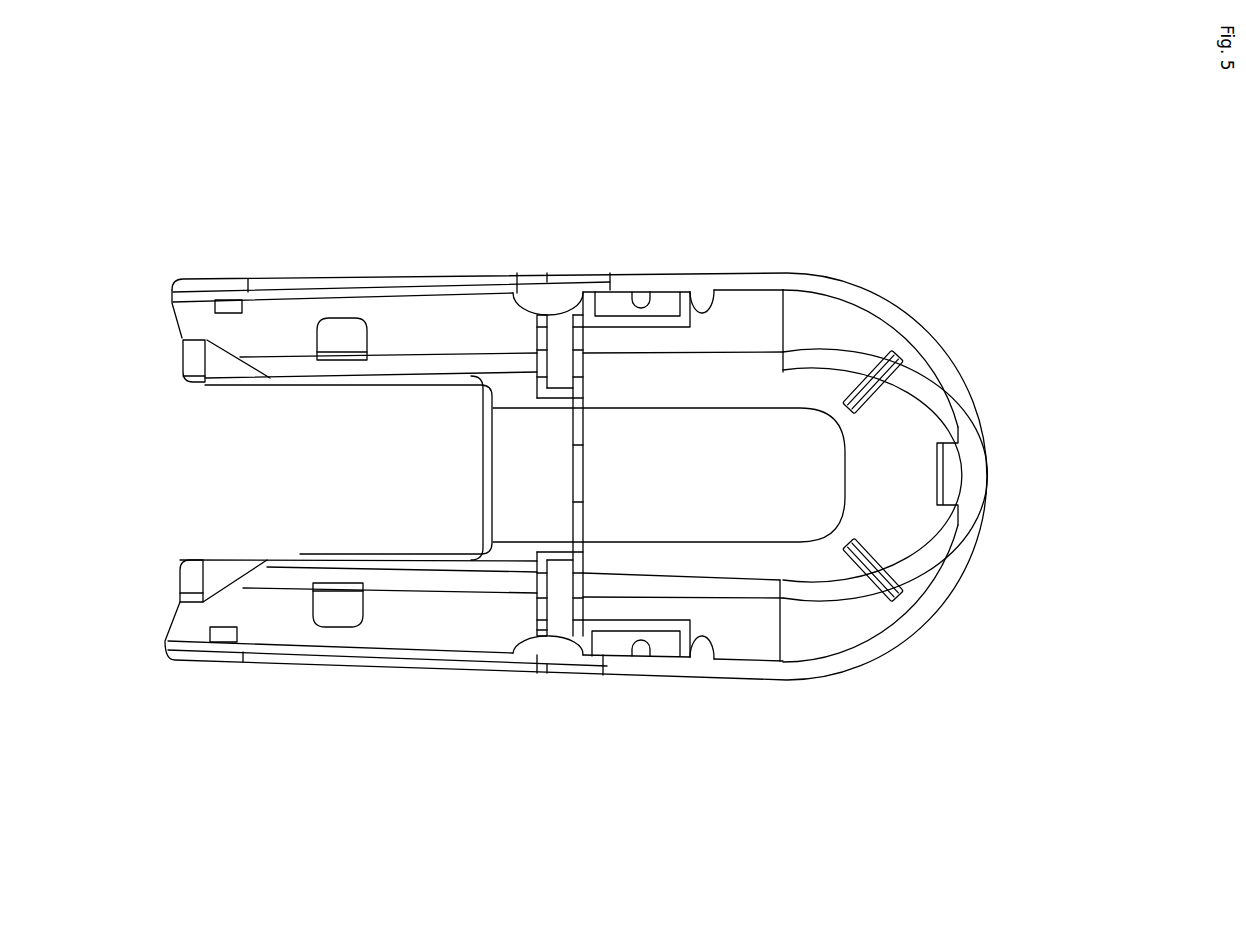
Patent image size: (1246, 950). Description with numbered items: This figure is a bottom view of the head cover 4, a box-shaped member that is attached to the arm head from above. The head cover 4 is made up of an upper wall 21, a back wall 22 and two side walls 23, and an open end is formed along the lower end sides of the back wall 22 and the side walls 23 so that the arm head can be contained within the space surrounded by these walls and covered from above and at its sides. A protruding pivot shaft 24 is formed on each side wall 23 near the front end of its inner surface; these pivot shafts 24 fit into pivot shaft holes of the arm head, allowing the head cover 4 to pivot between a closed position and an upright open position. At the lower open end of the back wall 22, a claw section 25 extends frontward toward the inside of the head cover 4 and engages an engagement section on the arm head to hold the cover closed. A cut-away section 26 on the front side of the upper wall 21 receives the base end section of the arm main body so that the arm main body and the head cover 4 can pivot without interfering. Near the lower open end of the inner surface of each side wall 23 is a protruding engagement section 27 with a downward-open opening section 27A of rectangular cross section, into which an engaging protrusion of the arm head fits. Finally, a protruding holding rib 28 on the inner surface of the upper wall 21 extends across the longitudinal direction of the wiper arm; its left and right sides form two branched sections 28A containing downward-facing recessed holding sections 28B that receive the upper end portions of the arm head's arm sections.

The head cover 4 is at (793, 230).
The upper wall 21 is at (986, 470).
The back wall 22 is at (783, 450).
The side walls 23 is at (461, 274).
The pivot shaft 24 is at (320, 340).
The claw section 25 is at (955, 430).
The cut-away section 26 is at (330, 387).
The protruding engagement section 27 is at (712, 289).
The opening section 27A is at (650, 292).
The holding rib 28 is at (580, 433).
The branched sections 28A is at (518, 274).
The recessed holding sections 28B is at (540, 362).